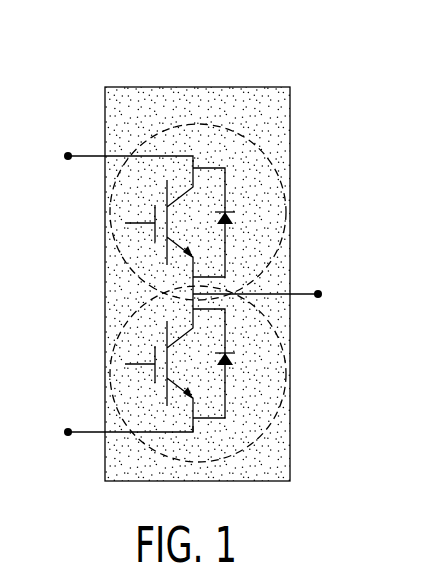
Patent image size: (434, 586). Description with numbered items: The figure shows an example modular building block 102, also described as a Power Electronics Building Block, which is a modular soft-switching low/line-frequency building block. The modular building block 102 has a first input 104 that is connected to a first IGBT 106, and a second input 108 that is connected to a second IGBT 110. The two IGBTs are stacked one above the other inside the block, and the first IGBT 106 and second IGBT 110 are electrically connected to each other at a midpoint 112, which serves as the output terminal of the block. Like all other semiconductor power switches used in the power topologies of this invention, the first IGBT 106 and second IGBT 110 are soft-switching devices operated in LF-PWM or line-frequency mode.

The modular building block 102 is at (247, 87).
The first input 104 is at (68, 154).
The first IGBT 106 is at (288, 204).
The second input 108 is at (68, 430).
The second IGBT 110 is at (288, 378).
The midpoint 112 is at (320, 293).